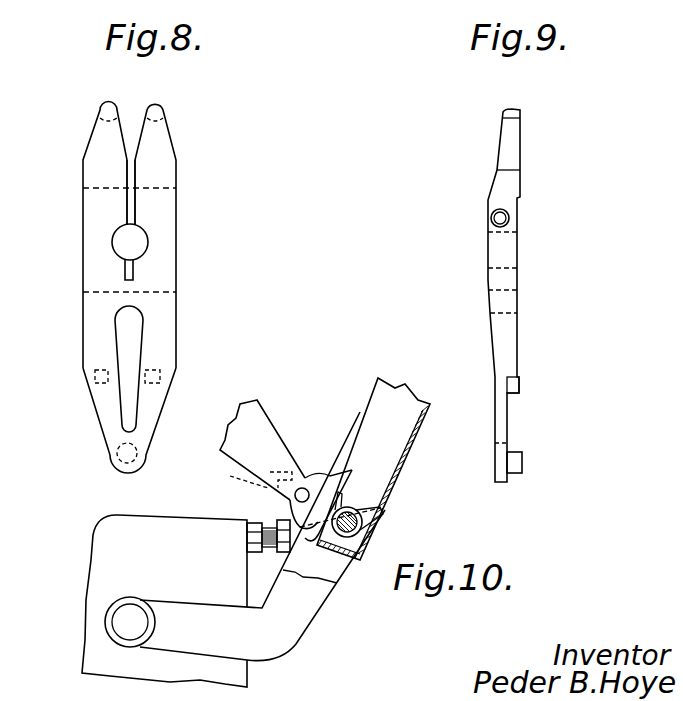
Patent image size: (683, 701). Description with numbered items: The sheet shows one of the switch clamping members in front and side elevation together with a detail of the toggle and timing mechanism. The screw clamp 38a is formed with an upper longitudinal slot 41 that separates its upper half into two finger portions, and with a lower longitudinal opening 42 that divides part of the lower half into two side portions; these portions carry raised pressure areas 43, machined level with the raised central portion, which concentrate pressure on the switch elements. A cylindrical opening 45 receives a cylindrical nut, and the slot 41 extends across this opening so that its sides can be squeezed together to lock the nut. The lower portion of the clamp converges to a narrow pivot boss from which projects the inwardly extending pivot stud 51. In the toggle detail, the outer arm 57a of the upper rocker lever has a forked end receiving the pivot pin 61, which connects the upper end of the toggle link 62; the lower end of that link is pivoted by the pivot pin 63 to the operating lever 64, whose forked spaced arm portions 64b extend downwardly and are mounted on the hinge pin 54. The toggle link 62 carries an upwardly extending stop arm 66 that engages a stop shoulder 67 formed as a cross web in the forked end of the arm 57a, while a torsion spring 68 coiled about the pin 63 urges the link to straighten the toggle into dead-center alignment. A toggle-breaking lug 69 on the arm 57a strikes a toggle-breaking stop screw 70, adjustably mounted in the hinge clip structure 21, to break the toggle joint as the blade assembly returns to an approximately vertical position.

In FIG. 10, the hinge clip structure 21 is at (103, 547).
In FIG. 8, the screw clamp 38a is at (85, 182).
In FIG. 9, the screw clamp 38a is at (490, 190).
In FIG. 8, the upper longitudinal slot 41 is at (131, 177).
In FIG. 9, the upper longitudinal slot 41 is at (505, 290).
In FIG. 8, the lower longitudinal opening 42 is at (122, 333).
In FIG. 9, the lower longitudinal opening 42 is at (503, 317).
In FIG. 8, the raised pressure areas 43 is at (104, 118).
In FIG. 9, the raised pressure areas 43 is at (520, 118).
In FIG. 8, the cylindrical opening 45 is at (118, 247).
In FIG. 9, the cylindrical opening 45 is at (488, 268).
In FIG. 8, the pivot stud 51 is at (117, 459).
In FIG. 9, the pivot stud 51 is at (522, 462).
In FIG. 10, the hinge pin 54 is at (120, 617).
In FIG. 10, the outer arm of the upper rocker lever 57a is at (238, 422).
In FIG. 10, the pivot pin 61 is at (306, 487).
In FIG. 10, the toggle link 62 is at (327, 497).
In FIG. 10, the pivot pin 63 is at (372, 522).
In FIG. 10, the operating lever 64 is at (393, 393).
In FIG. 10, the spaced arm portions 64b is at (210, 613).
In FIG. 10, the stop arm 66 is at (280, 472).
In FIG. 10, the stop shoulder 67 is at (237, 472).
In FIG. 10, the torsion spring 68 is at (345, 500).
In FIG. 10, the toggle-breaking lug 69 is at (297, 517).
In FIG. 10, the toggle-breaking stop screw 70 is at (280, 545).